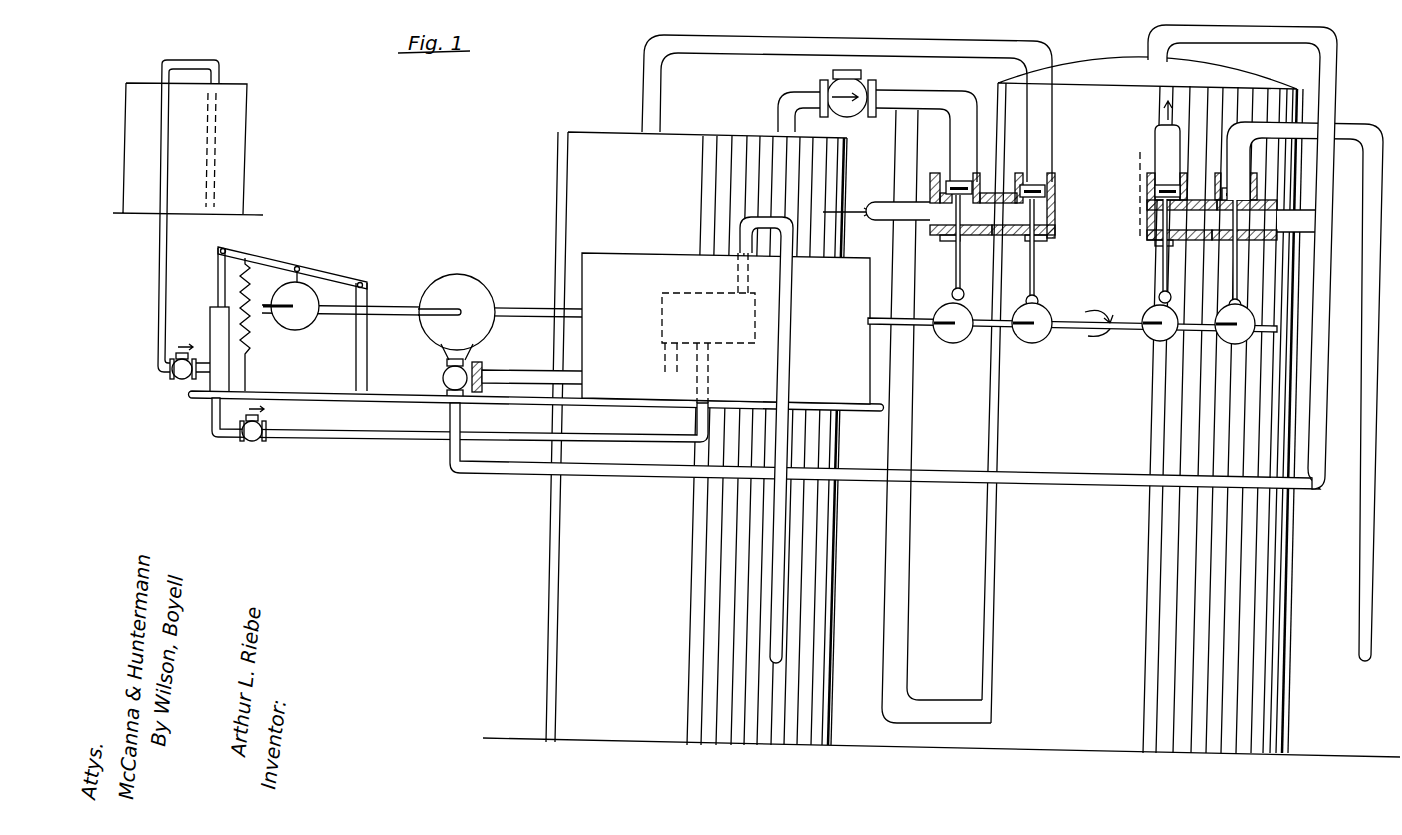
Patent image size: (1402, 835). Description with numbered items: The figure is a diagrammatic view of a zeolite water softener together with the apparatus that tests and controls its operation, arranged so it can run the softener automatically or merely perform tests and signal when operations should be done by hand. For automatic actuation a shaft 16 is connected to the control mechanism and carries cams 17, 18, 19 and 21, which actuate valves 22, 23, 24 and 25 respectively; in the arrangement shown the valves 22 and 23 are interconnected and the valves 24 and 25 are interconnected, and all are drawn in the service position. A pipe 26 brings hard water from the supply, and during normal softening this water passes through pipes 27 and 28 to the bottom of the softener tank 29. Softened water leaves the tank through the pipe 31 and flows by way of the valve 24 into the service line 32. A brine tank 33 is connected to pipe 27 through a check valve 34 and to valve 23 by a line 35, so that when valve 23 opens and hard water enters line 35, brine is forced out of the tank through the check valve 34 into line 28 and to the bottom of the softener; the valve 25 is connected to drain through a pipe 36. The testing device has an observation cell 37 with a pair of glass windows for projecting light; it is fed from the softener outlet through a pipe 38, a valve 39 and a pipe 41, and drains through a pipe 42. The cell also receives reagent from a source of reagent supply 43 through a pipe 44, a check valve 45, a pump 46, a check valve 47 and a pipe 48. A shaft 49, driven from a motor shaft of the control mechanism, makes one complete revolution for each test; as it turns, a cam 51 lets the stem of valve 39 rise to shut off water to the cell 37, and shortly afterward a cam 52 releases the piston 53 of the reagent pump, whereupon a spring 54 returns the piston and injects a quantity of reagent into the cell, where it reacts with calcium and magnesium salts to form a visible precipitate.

The shaft 16 is at (1118, 334).
The cam 17 is at (962, 342).
The cam 18 is at (1040, 344).
The cam 19 is at (1153, 344).
The cam 21 is at (1227, 343).
The valve 22 is at (971, 180).
The valve 23 is at (1057, 180).
The valve 24 is at (1147, 192).
The valve 25 is at (1233, 182).
The pipe 26 is at (898, 212).
The pipe 27 is at (934, 97).
The pipe 28 is at (912, 438).
The softener tank 29 is at (1150, 405).
The pipe 31 is at (1250, 32).
The service line 32 is at (1163, 140).
The brine tank 33 is at (696, 438).
The check valve 34 is at (838, 88).
The line 35 is at (705, 45).
The pipe 36 is at (1352, 124).
The observation cell 37 is at (678, 292).
The pipe 38 is at (521, 477).
The valve 39 is at (444, 377).
The pipe 41 is at (604, 378).
The pipe 42 is at (796, 377).
The source of reagent supply 43 is at (237, 113).
The pipe 44 is at (157, 262).
The check valve 45 is at (178, 382).
The pump 46 is at (214, 326).
The check valve 47 is at (258, 441).
The pipe 48 is at (416, 441).
The shaft 49 is at (514, 308).
The cam 51 is at (456, 283).
The cam 52 is at (302, 328).
The piston 53 is at (216, 262).
The spring 54 is at (248, 336).